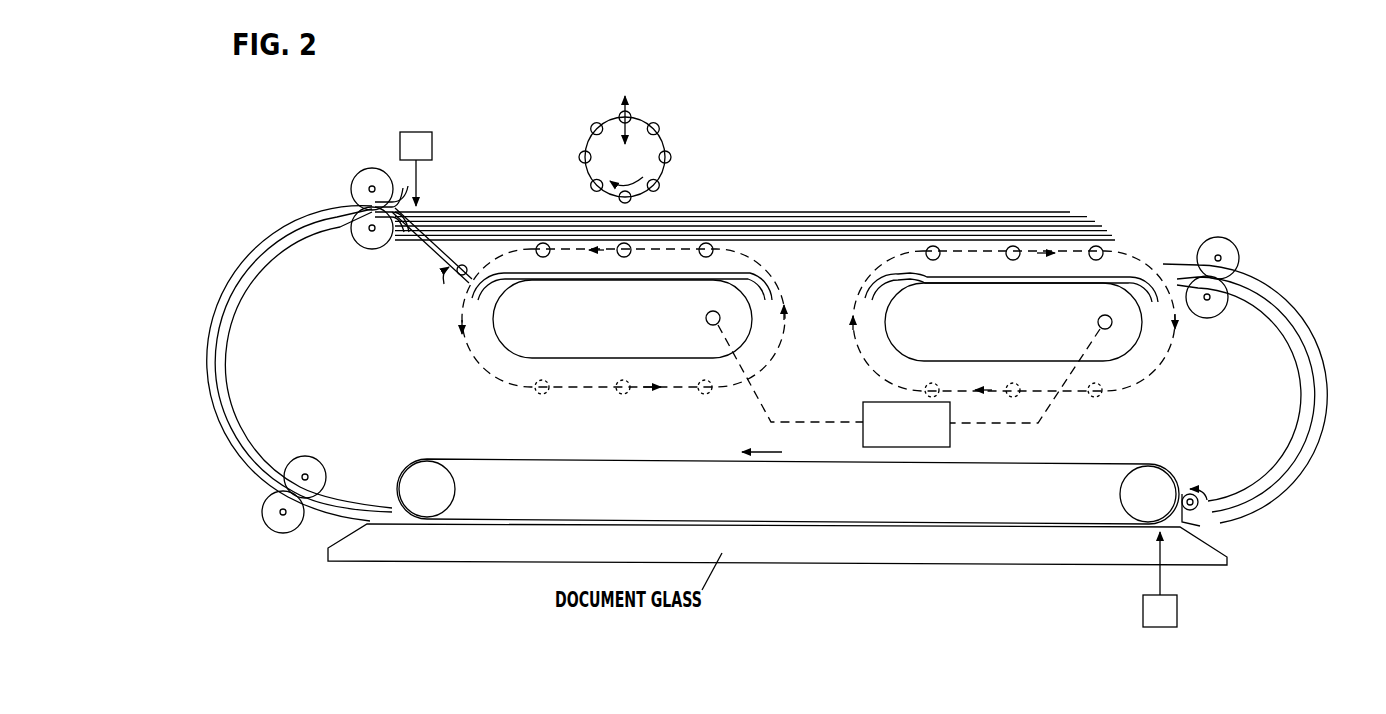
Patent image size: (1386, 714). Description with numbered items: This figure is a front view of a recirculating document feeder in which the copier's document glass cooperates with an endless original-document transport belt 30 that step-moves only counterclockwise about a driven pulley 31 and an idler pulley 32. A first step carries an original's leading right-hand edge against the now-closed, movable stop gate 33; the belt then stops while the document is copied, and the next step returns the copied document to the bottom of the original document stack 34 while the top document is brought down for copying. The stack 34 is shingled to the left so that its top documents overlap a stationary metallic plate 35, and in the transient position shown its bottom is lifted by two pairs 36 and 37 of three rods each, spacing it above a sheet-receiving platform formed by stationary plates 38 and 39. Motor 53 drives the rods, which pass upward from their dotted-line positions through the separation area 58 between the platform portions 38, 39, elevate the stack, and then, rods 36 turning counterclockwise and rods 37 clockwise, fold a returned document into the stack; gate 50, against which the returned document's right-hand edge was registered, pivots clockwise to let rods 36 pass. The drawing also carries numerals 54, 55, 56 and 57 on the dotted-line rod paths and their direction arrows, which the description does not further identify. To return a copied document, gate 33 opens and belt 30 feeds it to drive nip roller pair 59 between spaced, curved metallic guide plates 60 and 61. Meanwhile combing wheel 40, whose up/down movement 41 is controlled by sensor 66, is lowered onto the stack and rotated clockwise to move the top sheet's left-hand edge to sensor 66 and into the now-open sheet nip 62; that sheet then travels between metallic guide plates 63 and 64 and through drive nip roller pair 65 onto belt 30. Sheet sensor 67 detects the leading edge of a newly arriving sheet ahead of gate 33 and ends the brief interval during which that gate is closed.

The transport belt 30 is at (610, 458).
The driven pulley 31 is at (1124, 497).
The idler pulley 32 is at (452, 498).
The stop gate 33 is at (1195, 518).
The original document stack 34 is at (860, 206).
The stationary metallic plate 35 is at (425, 242).
The rods 36 is at (698, 255).
The rods 37 is at (1090, 258).
The stationary plate 38 is at (572, 275).
The stationary plate 39 is at (1062, 272).
The combing wheel 40 is at (655, 158).
The up/down movement 41 is at (627, 128).
The gate 50 is at (459, 280).
The motor 53 is at (862, 403).
The roller chain path 54 is at (460, 324).
The roller chain path 55 is at (1176, 342).
The chain direction arrow 56 is at (784, 328).
The chain direction arrow 57 is at (852, 331).
The separation area 58 is at (828, 308).
The drive nip roller pair 59 is at (1238, 244).
The curved metallic guide plate 60 is at (1326, 379).
The curved metallic guide plate 61 is at (1294, 368).
The drive nip roller pair 62 is at (349, 184).
The metallic guide plate 63 is at (210, 328).
The metallic guide plate 64 is at (236, 323).
The drive nip roller pair 65 is at (259, 510).
The sensor 66 is at (432, 145).
The sheet sensor 67 is at (1178, 603).